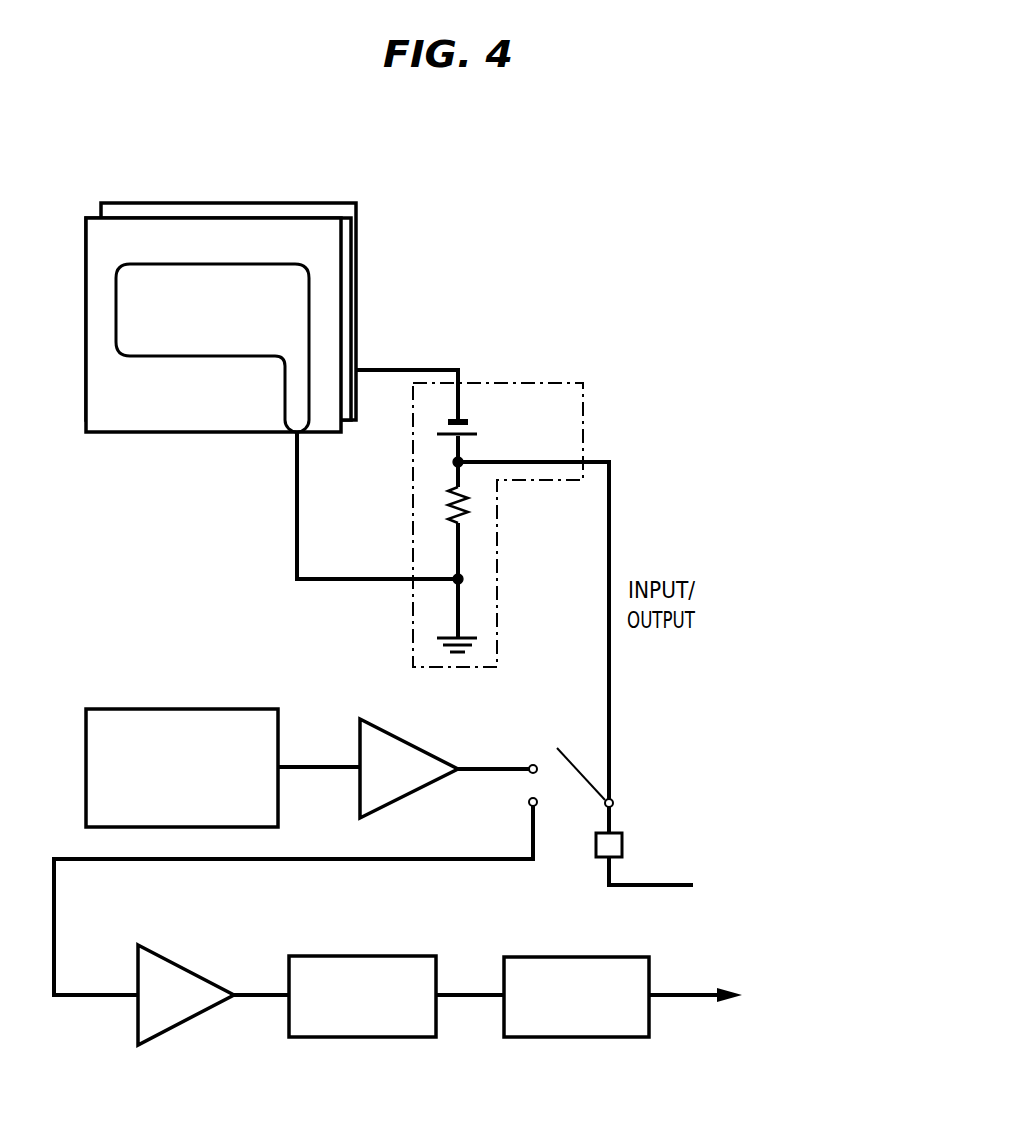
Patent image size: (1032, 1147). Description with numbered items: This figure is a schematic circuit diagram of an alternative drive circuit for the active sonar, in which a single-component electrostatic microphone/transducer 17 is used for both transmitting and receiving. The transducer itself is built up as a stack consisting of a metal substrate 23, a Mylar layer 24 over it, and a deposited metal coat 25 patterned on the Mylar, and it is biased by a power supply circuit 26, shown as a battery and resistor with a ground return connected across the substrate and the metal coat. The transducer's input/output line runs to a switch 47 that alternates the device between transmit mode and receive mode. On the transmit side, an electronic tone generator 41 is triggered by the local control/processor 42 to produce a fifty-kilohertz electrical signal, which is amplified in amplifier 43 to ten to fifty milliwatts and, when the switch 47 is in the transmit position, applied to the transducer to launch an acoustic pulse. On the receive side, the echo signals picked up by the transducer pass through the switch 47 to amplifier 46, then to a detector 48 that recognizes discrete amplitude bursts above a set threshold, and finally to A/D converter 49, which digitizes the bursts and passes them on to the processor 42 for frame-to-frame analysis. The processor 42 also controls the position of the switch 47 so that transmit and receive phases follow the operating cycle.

The electrostatic microphone/transducer 17 is at (638, 182).
The metal substrate 23 is at (374, 232).
The Mylar layer 24 is at (368, 272).
The deposited metal coat 25 is at (328, 328).
The power supply circuit 26 is at (413, 535).
The electronic tone generator 41 is at (170, 709).
The local control/processor 42 is at (751, 943).
The amplifier 43 is at (402, 738).
The amplifier 46 is at (178, 965).
The switch 47 is at (622, 843).
The detector 48 is at (362, 956).
The A/D converter 49 is at (573, 957).